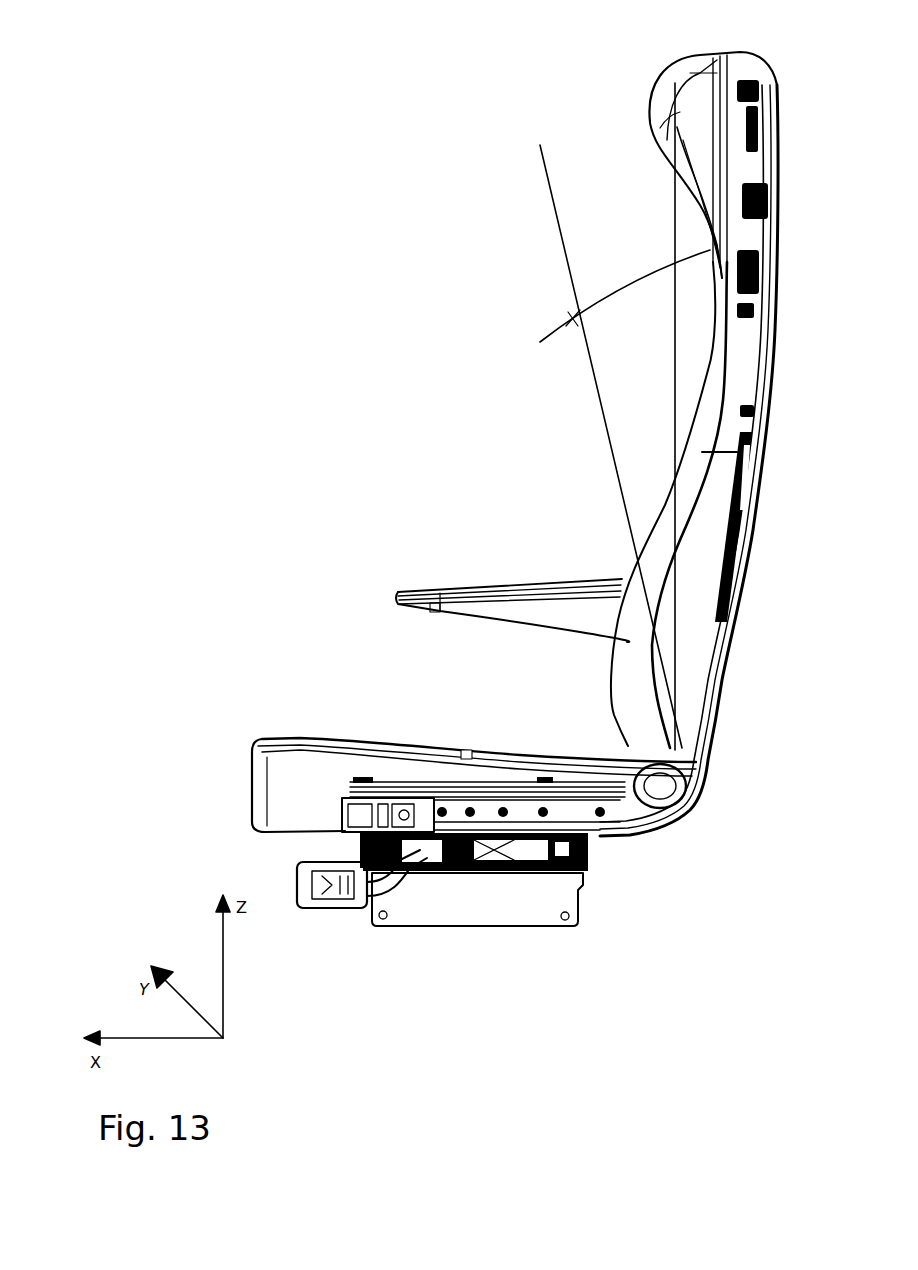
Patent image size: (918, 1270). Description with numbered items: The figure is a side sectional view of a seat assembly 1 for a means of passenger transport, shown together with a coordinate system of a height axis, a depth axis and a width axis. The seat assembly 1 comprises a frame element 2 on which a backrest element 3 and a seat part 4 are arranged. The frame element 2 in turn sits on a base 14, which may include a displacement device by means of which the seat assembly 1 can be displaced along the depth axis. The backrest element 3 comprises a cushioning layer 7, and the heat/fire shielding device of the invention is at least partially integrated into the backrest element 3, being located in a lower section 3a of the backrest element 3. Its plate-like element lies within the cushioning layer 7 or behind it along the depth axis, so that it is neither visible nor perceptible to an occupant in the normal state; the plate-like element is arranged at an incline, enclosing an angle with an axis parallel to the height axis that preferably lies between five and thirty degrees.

The seat assembly 1 is at (338, 125).
The frame element 2 is at (713, 700).
The backrest element 3 is at (680, 522).
The lower section of the backrest element 3a is at (594, 706).
The seat part 4 is at (270, 738).
The cushioning layer 7 is at (620, 662).
The base 14 is at (490, 908).